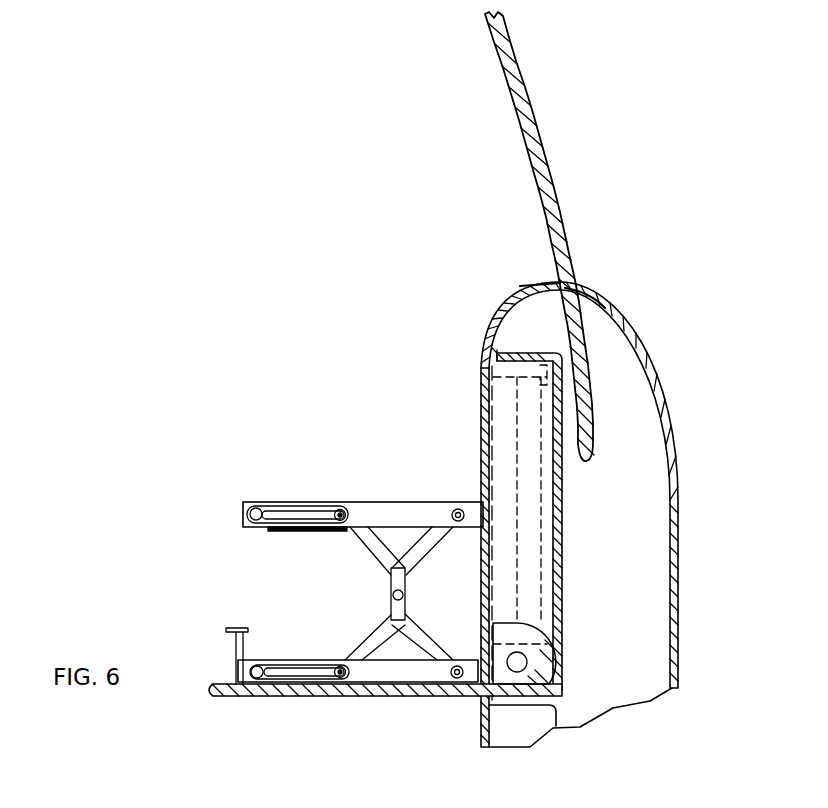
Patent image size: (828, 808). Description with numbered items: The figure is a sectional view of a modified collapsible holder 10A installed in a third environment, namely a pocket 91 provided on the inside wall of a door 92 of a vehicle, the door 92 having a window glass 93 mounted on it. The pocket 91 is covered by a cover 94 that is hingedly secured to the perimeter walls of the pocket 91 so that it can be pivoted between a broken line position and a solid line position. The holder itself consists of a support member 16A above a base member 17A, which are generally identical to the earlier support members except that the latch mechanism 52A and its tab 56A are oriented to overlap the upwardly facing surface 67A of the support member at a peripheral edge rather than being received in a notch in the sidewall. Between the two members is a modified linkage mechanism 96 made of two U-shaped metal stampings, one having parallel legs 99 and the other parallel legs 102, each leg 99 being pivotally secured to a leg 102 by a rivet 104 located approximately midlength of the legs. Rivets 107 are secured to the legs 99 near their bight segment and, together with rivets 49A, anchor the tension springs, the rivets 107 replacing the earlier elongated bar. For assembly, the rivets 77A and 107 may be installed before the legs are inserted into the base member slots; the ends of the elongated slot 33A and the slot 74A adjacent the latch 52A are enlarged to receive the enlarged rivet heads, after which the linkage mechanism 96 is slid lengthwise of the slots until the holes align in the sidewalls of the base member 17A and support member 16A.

The collapsible holder 10A is at (251, 491).
The support member 16A is at (243, 508).
The base member 17A is at (246, 663).
The elongated slot 33A is at (277, 677).
The rivet 49A is at (438, 694).
The latch mechanism 52A is at (542, 372).
The tab 56A is at (245, 630).
The upwardly facing surface 67A is at (305, 503).
The slot 74A is at (282, 514).
The rivet 77A is at (341, 510).
The pocket 91 is at (507, 436).
The door 92 is at (641, 336).
The window glass 93 is at (540, 135).
The cover 94 is at (492, 462).
The linkage mechanism 96 is at (393, 593).
The legs 99 is at (420, 554).
The legs 102 is at (372, 553).
The rivet 104 is at (404, 595).
The rivet 107 is at (340, 680).